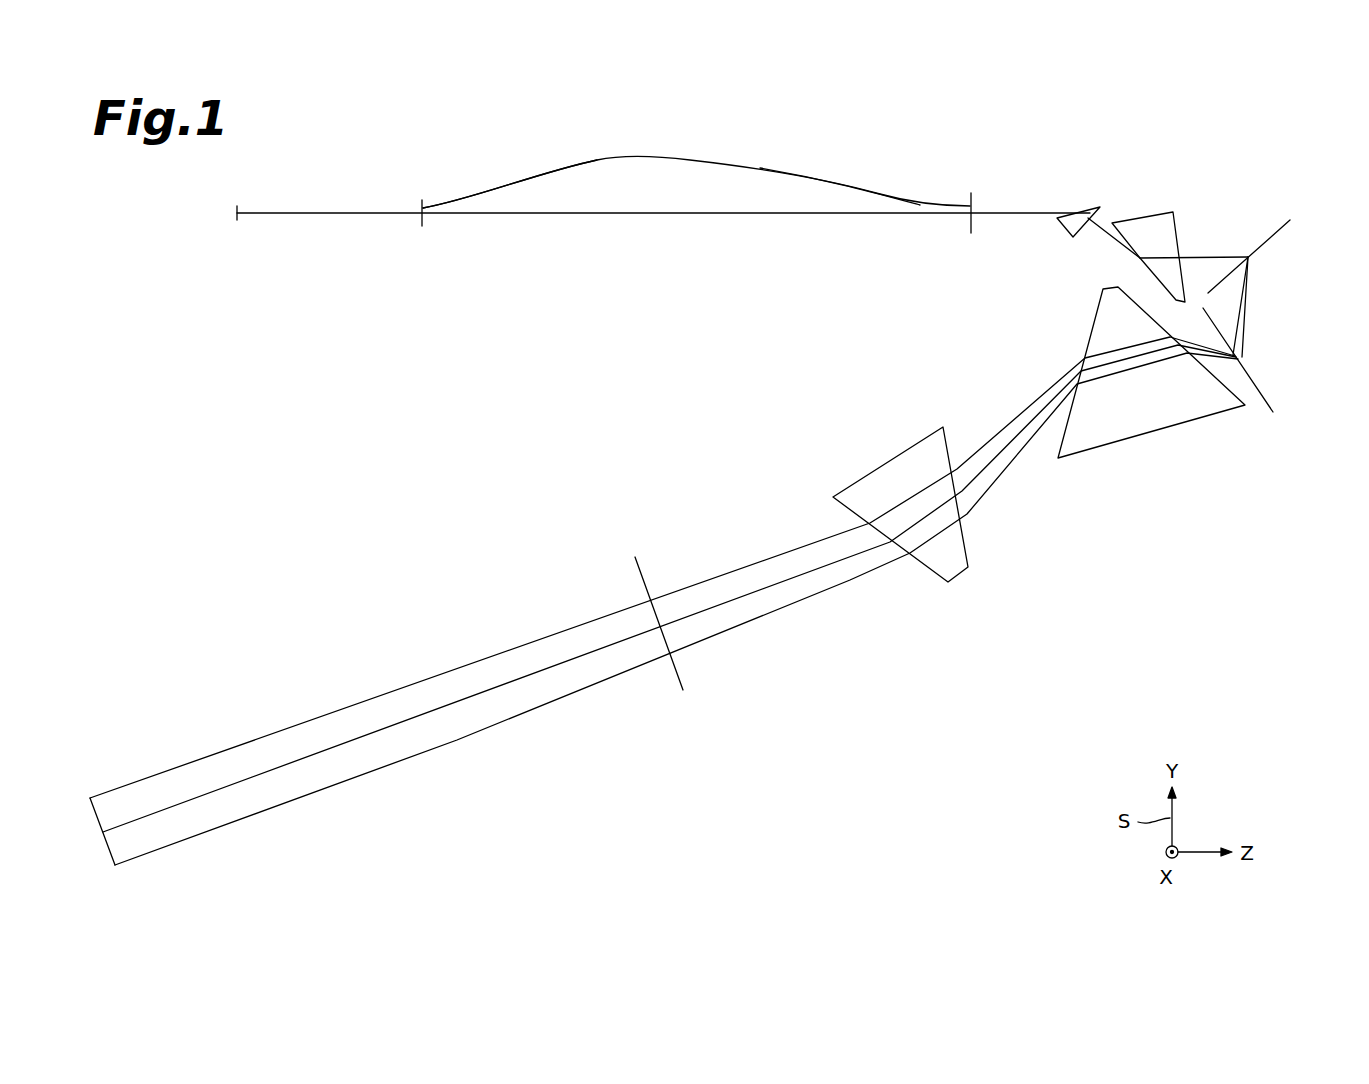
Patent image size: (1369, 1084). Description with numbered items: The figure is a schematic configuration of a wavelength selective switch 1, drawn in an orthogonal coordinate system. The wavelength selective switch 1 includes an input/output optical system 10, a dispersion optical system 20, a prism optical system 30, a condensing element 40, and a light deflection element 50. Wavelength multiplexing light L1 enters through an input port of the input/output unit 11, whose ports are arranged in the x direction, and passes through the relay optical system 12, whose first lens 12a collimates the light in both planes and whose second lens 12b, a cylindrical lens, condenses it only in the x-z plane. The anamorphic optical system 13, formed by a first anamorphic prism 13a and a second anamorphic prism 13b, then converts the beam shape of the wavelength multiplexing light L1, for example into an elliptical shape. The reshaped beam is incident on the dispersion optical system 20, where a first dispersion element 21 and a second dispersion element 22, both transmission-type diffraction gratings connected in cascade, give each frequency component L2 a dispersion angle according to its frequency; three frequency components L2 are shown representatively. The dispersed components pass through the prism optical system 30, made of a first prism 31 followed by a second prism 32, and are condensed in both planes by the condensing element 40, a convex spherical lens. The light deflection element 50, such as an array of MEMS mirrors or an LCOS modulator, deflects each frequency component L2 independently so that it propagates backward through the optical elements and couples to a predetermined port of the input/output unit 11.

The wavelength selective switch 1 is at (1246, 140).
The input/output optical system 10 is at (240, 117).
The input/output unit 11 is at (237, 211).
The relay optical system 12 is at (717, 152).
The first lens 12a is at (535, 178).
The second lens 12b is at (794, 176).
The anamorphic optical system 13 is at (1070, 152).
The first anamorphic prism 13a is at (1086, 205).
The second anamorphic prism 13b is at (1147, 222).
The dispersion optical system 20 is at (1305, 268).
The first dispersion element 21 is at (1277, 237).
The second dispersion element 22 is at (1262, 388).
The prism optical system 30 is at (1033, 551).
The first prism 31 is at (1122, 442).
The second prism 32 is at (968, 540).
The condensing element 40 is at (679, 686).
The light deflection element 50 is at (100, 868).
The wavelength multiplexing light L1 is at (818, 216).
The frequency component L2 is at (1046, 420).